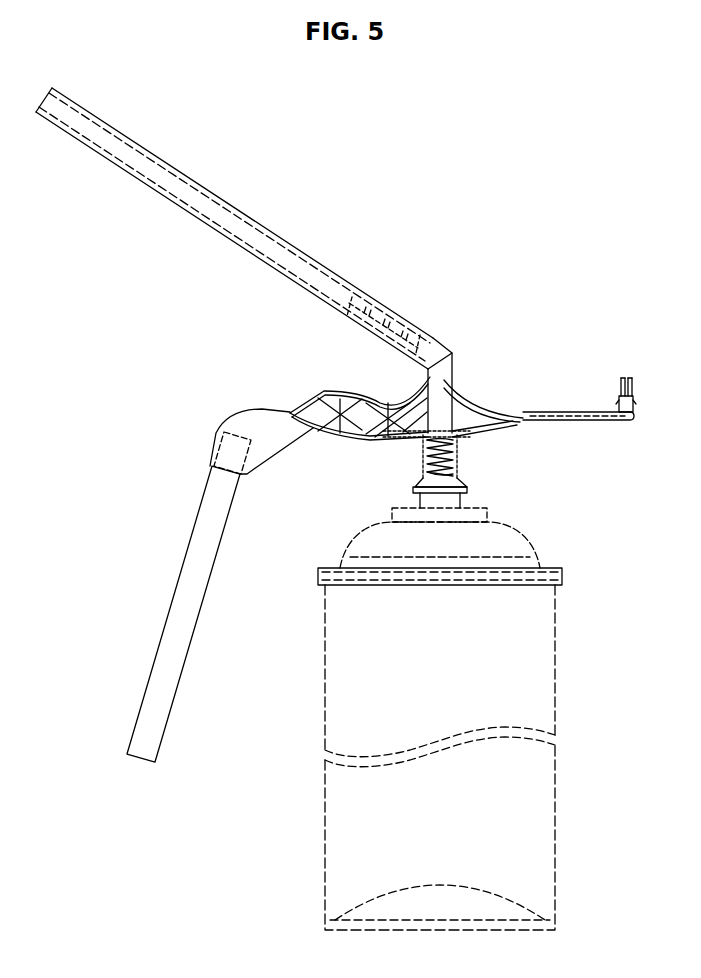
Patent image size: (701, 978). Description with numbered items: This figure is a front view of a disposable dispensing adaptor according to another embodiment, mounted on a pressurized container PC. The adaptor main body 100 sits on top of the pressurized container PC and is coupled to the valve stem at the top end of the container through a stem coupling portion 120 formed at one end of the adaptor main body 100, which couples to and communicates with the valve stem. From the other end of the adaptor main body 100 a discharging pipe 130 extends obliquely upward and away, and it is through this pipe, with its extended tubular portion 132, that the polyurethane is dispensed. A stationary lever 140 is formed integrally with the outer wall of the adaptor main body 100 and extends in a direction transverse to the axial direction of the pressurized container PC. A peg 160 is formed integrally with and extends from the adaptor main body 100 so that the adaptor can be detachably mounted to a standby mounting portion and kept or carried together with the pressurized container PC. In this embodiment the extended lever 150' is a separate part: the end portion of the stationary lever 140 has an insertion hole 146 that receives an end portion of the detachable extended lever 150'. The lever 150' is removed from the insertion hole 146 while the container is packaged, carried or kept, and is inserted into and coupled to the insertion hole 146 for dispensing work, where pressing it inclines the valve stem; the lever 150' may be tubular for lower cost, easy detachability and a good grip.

The adaptor main body 100 is at (446, 398).
The stem coupling portion 120 is at (457, 458).
The discharging pipe 130 is at (397, 314).
The extension tube 132 is at (245, 209).
The stationary lever 140 is at (276, 406).
The insertion hole 146 is at (222, 443).
The detachable extended lever 150' is at (160, 614).
The peg 160 is at (627, 376).
The pressurized container PC is at (557, 655).